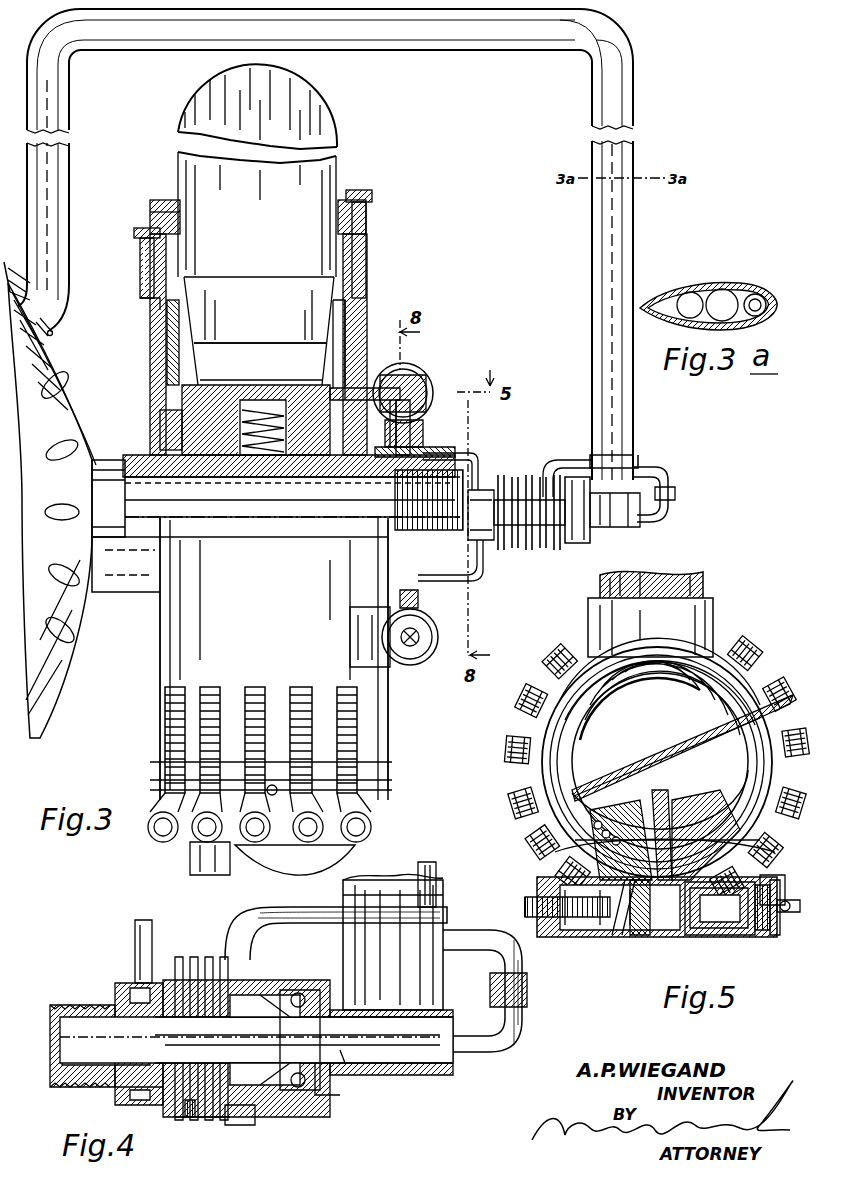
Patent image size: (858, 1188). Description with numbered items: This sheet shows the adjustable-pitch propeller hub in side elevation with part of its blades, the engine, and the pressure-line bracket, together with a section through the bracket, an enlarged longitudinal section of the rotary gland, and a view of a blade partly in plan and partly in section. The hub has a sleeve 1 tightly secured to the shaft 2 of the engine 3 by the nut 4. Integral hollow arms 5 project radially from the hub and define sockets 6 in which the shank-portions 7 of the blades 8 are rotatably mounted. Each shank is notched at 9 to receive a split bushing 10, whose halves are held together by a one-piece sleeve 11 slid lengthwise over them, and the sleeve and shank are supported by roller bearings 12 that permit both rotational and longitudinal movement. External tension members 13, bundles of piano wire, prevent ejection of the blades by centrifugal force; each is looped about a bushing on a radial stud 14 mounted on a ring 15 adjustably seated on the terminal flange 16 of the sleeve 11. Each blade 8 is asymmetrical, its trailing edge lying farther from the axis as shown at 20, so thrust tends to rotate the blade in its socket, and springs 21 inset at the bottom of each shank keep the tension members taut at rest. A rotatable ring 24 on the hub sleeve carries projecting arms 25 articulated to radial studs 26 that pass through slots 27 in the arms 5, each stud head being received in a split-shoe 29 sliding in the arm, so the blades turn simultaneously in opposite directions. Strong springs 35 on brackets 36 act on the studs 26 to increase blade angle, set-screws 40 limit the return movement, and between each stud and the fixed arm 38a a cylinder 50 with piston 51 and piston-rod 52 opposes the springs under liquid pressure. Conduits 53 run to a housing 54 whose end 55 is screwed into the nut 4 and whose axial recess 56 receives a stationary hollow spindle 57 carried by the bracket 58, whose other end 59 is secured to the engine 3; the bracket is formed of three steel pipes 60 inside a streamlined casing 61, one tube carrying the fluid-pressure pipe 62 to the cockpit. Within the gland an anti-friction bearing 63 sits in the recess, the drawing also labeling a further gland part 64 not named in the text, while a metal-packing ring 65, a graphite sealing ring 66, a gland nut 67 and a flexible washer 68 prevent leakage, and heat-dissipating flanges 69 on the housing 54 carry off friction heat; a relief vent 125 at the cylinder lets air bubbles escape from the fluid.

In FIG. 3, the hub sleeve 1 is at (140, 458).
In FIG. 5, the hub sleeve 1 is at (710, 620).
In FIG. 3, the shaft 2 is at (440, 403).
In FIG. 5, the shaft 2 is at (690, 575).
In FIG. 3, the engine 3 is at (52, 510).
In FIG. 3, the nut 4 is at (395, 485).
In FIG. 3, the hollow arms 5 is at (152, 355).
In FIG. 5, the hollow arms 5 is at (580, 852).
In FIG. 3, the sockets 6 is at (165, 318).
In FIG. 3, the shank-portions 7 is at (257, 214).
In FIG. 3, the blades 8 is at (338, 162).
In FIG. 5, the blades 8 is at (660, 755).
In FIG. 3, the notch 9 is at (259, 331).
In FIG. 3, the split bushing 10 is at (200, 340).
In FIG. 3, the sleeve 11 is at (160, 300).
In FIG. 3, the roller bearings 12 is at (145, 262).
In FIG. 5, the roller bearings 12 is at (565, 840).
In FIG. 3, the tension members 13 is at (215, 690).
In FIG. 3, the radial stud 14 is at (163, 835).
In FIG. 5, the radial stud 14 is at (740, 682).
In FIG. 3, the ring 15 is at (165, 200).
In FIG. 5, the ring 15 is at (705, 660).
In FIG. 3, the terminal flange 16 is at (150, 214).
In FIG. 5, the trailing edge offset 20 is at (797, 698).
In FIG. 3, the springs 21 is at (262, 405).
In FIG. 3, the rotatable ring 24 is at (426, 448).
In FIG. 3, the projecting arms 25 is at (425, 428).
In FIG. 3, the radial studs 26 is at (375, 362).
In FIG. 5, the radial studs 26 is at (672, 946).
In FIG. 3, the slots 27 is at (345, 382).
In FIG. 5, the slots 27 is at (620, 935).
In FIG. 3, the split-shoe 29 is at (425, 437).
In FIG. 5, the springs 35 is at (640, 938).
In FIG. 5, the brackets 36 is at (545, 886).
In FIG. 3, the fixed arm 38a is at (425, 632).
In FIG. 5, the fixed arm 38a is at (766, 880).
In FIG. 5, the set-screws 40 is at (575, 920).
In FIG. 3, the cylinder 50 is at (410, 372).
In FIG. 5, the cylinder 50 is at (762, 932).
In FIG. 5, the piston 51 is at (732, 936).
In FIG. 5, the piston-rod 52 is at (720, 908).
In FIG. 3, the liquid-pressure conduits 53 is at (480, 455).
In FIG. 5, the liquid-pressure conduits 53 is at (778, 902).
In FIG. 4, the liquid-pressure conduits 53 is at (138, 940).
In FIG. 3, the housing 54 is at (481, 515).
In FIG. 4, the housing 54 is at (118, 985).
In FIG. 4, the housing end 55 is at (72, 1005).
In FIG. 4, the axial recess 56 is at (240, 1125).
In FIG. 4, the hollow spindle 57 is at (342, 1063).
In FIG. 3, the bracket 58 is at (60, 215).
In FIG. 4, the bracket 58 is at (440, 890).
In FIG. 3, the bracket end 59 is at (53, 331).
In FIG. 3A, the steel pipes 60 is at (738, 290).
In FIG. 4, the steel pipes 60 is at (420, 970).
In FIG. 3A, the casing 61 is at (664, 320).
In FIG. 3, the fluid-pressure pipe 62 is at (22, 268).
In FIG. 3A, the fluid-pressure pipe 62 is at (756, 292).
In FIG. 4, the fluid-pressure pipe 62 is at (470, 955).
In FIG. 4, the anti-friction bearing 63 is at (325, 1095).
In FIG. 4, the ball 64 is at (320, 1117).
In FIG. 4, the metal-packing ring 65 is at (170, 1100).
In FIG. 4, the sealing ring 66 is at (190, 1105).
In FIG. 4, the gland nut 67 is at (200, 1120).
In FIG. 4, the flexible washer 68 is at (256, 1048).
In FIG. 3, the heat-dissipating flanges 69 is at (525, 550).
In FIG. 4, the heat-dissipating flanges 69 is at (210, 957).
In FIG. 3, the relief vent 125 is at (408, 648).
In FIG. 5, the relief vent 125 is at (784, 912).